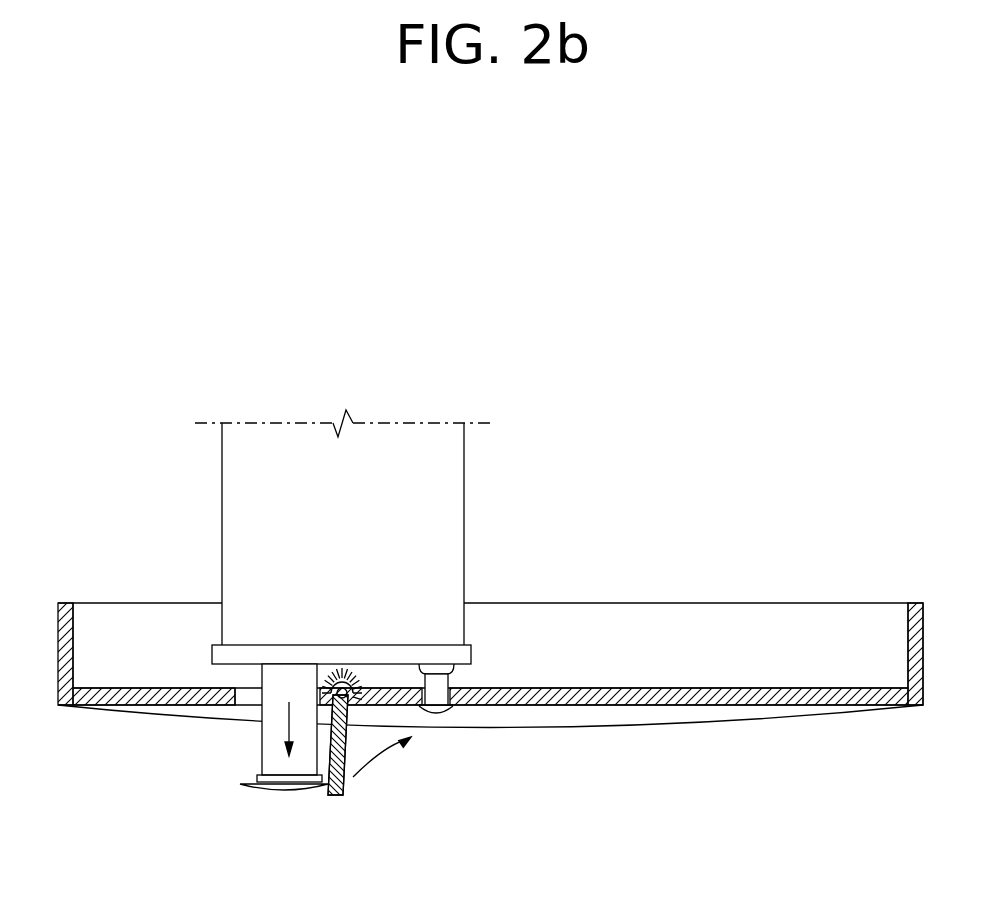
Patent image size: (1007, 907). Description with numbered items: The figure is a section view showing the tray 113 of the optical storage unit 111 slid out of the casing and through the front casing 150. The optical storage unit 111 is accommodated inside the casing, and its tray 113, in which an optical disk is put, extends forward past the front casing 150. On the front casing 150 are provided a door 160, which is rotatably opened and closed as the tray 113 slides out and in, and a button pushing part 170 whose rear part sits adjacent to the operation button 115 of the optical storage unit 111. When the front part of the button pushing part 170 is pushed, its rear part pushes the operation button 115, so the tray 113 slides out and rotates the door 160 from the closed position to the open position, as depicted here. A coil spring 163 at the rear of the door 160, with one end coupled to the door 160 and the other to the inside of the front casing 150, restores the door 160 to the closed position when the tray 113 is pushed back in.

The optical storage unit 111 is at (458, 478).
The tray 113 is at (258, 788).
The operation button 115 is at (450, 677).
The front casing 150 is at (673, 705).
The door 160 is at (335, 797).
The coil spring 163 is at (355, 695).
The button pushing part 170 is at (447, 713).